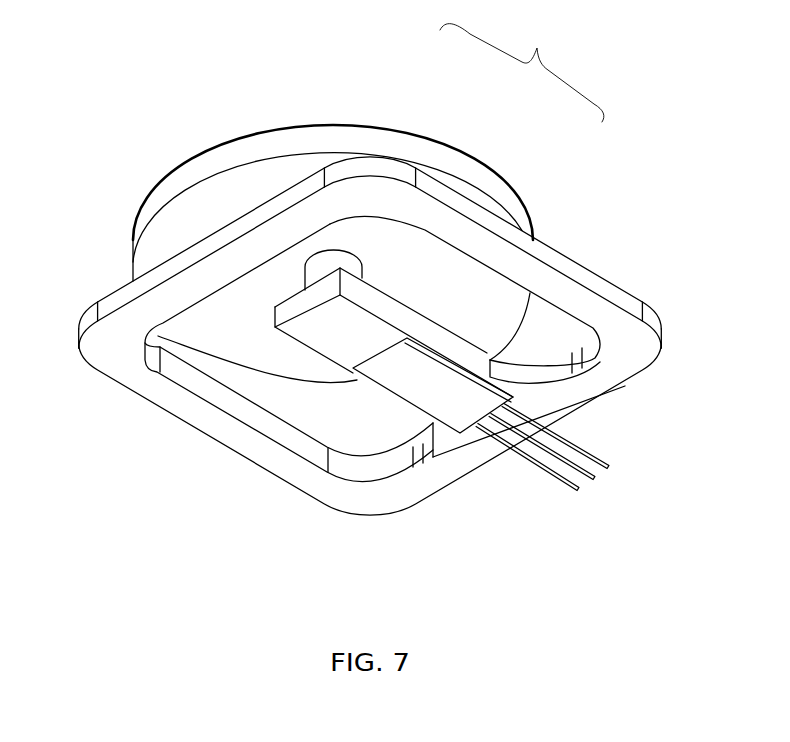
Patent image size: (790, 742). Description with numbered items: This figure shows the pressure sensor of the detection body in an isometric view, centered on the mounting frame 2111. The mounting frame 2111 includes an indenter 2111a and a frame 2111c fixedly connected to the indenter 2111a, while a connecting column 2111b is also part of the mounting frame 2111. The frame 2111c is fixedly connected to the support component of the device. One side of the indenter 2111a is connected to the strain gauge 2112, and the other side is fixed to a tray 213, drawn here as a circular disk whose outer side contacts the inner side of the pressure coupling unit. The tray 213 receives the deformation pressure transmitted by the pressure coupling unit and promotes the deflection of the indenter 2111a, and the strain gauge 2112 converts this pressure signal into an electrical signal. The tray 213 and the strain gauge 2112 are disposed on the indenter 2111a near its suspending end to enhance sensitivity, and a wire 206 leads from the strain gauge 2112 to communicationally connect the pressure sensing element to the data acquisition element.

The tray 213 is at (218, 193).
The mounting frame 2111 is at (522, 68).
The indenter 2111a is at (335, 325).
The connecting column 2111b is at (325, 263).
The frame 2111c is at (490, 257).
The strain gauge 2112 is at (437, 393).
The wire 206 is at (560, 483).